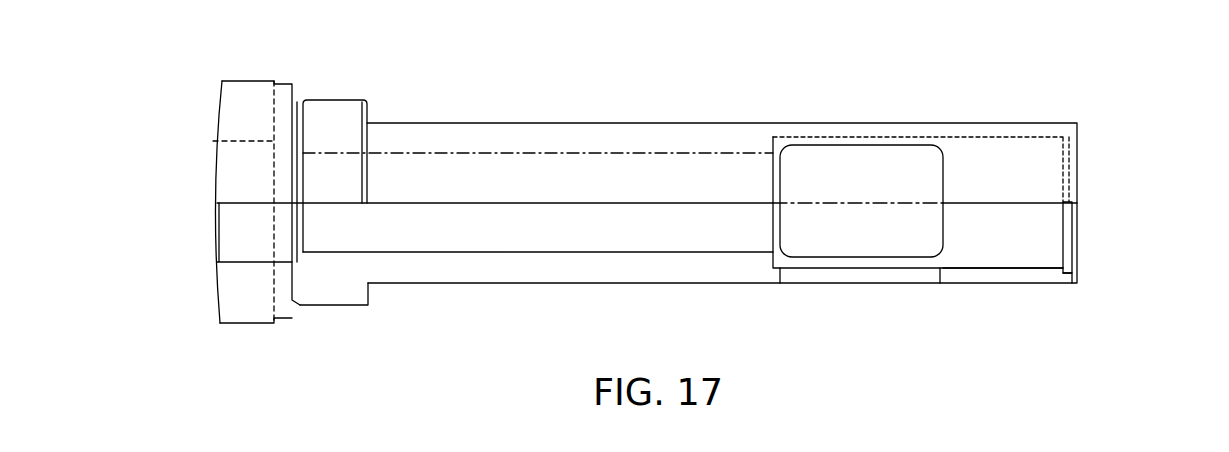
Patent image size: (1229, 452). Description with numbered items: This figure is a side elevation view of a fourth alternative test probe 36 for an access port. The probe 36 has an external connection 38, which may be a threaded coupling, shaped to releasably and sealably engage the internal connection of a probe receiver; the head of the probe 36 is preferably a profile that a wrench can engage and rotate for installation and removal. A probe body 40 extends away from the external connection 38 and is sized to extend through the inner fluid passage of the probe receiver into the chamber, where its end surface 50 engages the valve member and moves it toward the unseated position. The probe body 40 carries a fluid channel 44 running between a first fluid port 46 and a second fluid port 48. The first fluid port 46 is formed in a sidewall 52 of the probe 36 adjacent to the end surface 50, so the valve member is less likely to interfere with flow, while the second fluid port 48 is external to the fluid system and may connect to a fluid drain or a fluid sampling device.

The probe 36 is at (280, 352).
The external connection 38 is at (333, 108).
The probe body 40 is at (1020, 261).
The fluid channel 44 is at (472, 217).
The first fluid port 46 is at (858, 235).
The second fluid port 48 is at (235, 188).
The end surface 50 is at (1076, 215).
The sidewall 52 is at (955, 168).